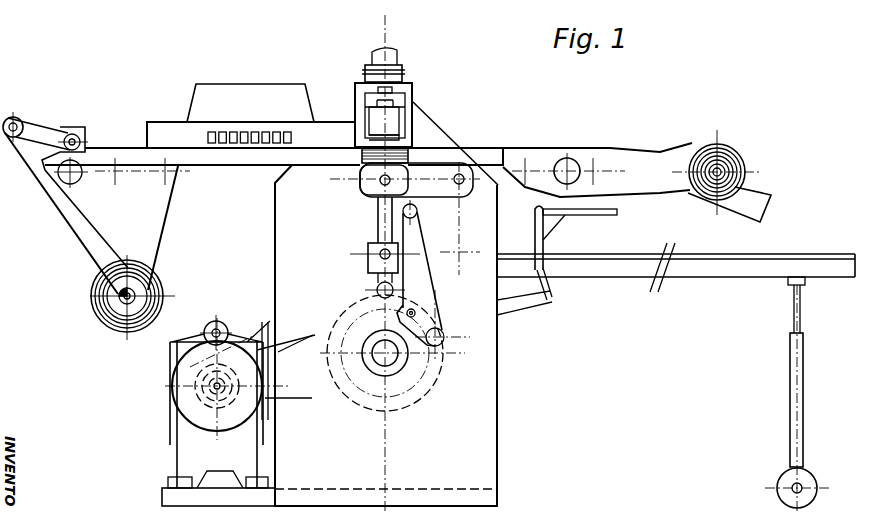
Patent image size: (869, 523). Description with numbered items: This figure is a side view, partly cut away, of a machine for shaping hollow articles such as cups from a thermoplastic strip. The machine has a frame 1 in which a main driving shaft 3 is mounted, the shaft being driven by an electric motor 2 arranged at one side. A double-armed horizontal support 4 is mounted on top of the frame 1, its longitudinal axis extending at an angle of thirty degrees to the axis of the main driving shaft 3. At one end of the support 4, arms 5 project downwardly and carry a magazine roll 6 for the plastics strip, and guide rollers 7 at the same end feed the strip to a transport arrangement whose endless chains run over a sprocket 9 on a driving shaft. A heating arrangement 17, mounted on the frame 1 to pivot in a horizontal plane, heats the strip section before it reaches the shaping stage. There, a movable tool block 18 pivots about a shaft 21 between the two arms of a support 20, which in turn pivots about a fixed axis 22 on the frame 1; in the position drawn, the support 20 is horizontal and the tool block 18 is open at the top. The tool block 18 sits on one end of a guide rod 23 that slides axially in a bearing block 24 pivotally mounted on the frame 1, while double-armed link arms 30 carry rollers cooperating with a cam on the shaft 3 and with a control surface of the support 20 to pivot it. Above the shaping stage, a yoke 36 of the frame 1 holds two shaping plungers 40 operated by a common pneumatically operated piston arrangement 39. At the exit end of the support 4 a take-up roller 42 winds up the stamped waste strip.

The frame 1 is at (488, 442).
The electric motor 2 is at (178, 410).
The main driving shaft 3 is at (391, 360).
The double-armed horizontal support 4 is at (483, 150).
The arms 5 is at (162, 212).
The magazine roll 6 is at (118, 302).
The guide rollers 7 is at (20, 123).
The sprocket 9 is at (566, 158).
The heating arrangement 17 is at (240, 95).
The movable tool block 18 is at (358, 173).
The support 20 is at (446, 197).
The shaft 21 is at (381, 184).
The fixed axis 22 is at (462, 186).
The guide rod 23 is at (378, 225).
The bearing block 24 is at (368, 264).
The double-armed link arms 30 is at (423, 287).
The yoke 36 is at (412, 96).
The pneumatically operated piston arrangement 39 is at (398, 70).
The shaping pistons or plungers 40 is at (412, 133).
The take-up roller 42 is at (730, 158).